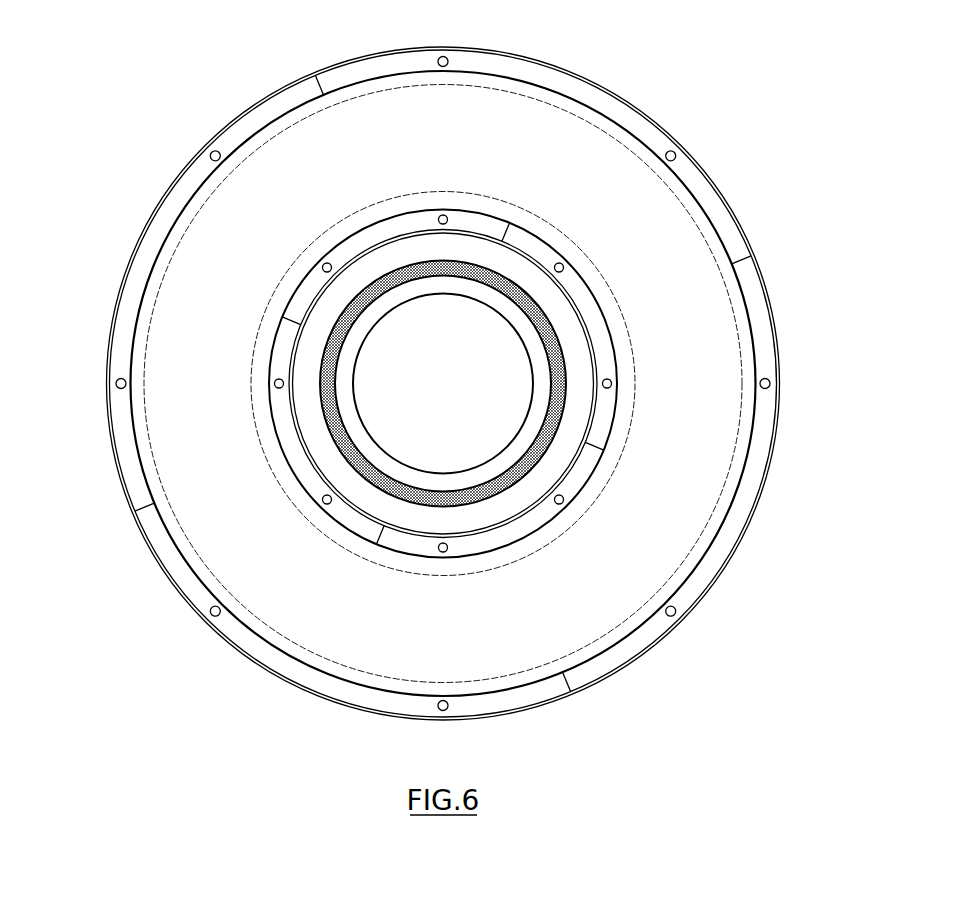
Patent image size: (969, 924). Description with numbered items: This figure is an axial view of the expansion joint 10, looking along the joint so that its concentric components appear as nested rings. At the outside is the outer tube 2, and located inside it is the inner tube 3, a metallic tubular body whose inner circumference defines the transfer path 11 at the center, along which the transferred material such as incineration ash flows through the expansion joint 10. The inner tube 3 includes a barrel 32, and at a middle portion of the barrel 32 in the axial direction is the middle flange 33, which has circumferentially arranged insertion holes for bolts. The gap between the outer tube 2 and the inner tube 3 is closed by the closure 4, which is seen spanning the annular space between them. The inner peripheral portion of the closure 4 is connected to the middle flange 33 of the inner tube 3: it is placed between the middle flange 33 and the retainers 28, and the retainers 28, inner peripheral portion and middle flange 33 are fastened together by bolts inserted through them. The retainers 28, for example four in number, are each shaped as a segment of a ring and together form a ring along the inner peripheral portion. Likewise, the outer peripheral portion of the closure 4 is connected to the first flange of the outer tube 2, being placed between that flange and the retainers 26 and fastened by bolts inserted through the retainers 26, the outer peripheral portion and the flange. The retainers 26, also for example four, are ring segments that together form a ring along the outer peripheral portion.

The expansion joint 10 is at (138, 167).
The outer tube 2 is at (780, 347).
The retainers 26 is at (710, 203).
The closure 4 is at (697, 470).
The retainers 28 is at (478, 222).
The middle flange 33 is at (313, 435).
The barrel 32 is at (335, 384).
The inner tube 3 is at (428, 297).
The transfer path 11 is at (481, 408).